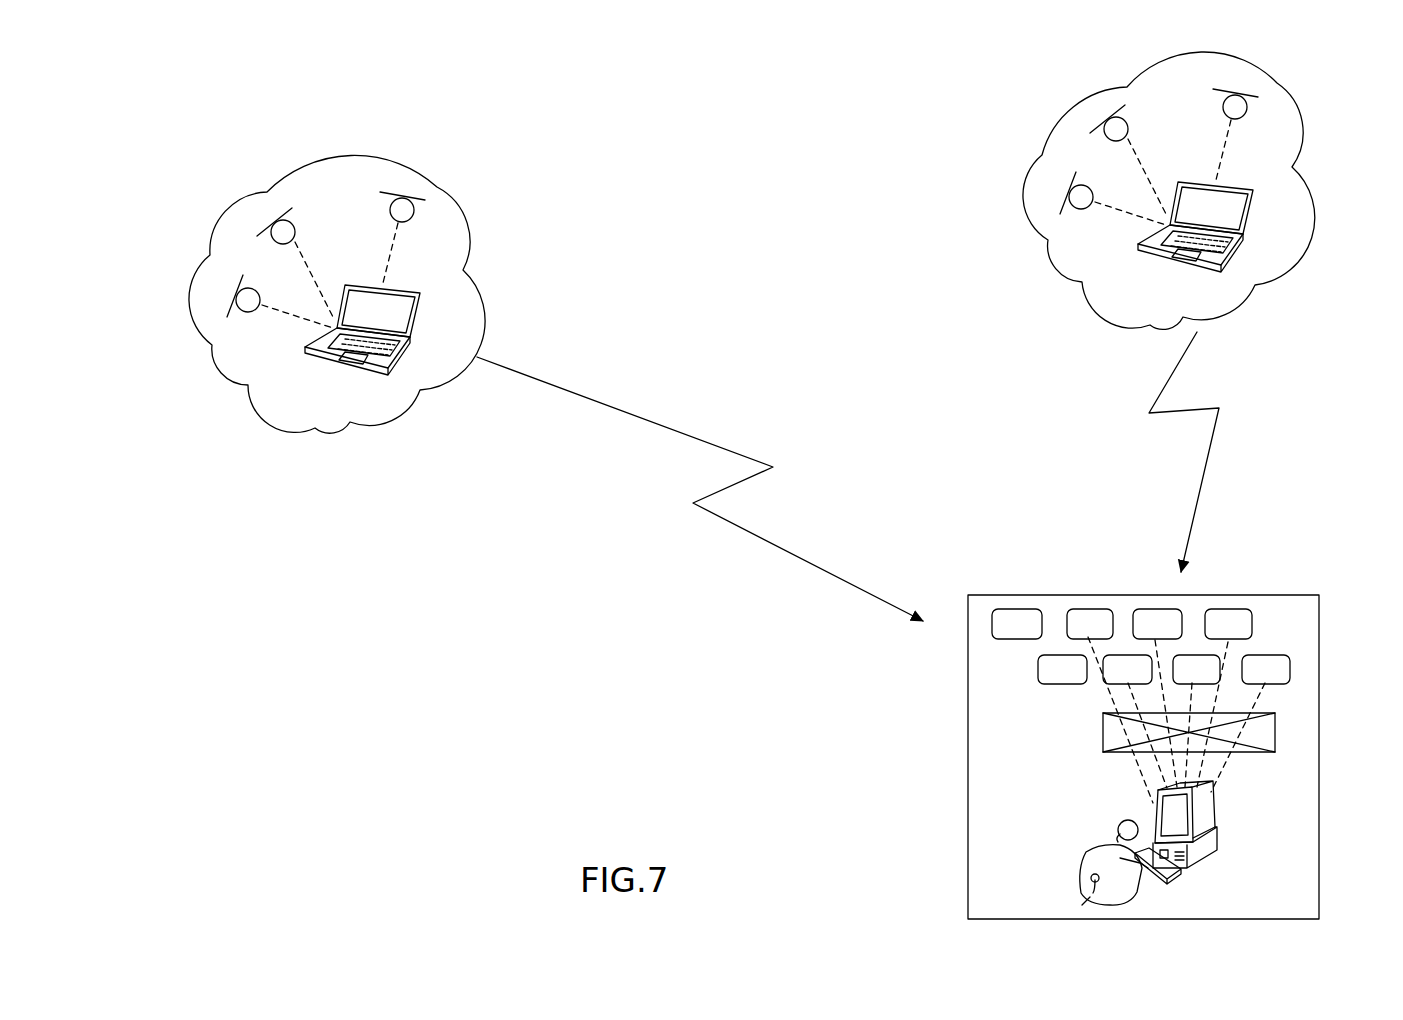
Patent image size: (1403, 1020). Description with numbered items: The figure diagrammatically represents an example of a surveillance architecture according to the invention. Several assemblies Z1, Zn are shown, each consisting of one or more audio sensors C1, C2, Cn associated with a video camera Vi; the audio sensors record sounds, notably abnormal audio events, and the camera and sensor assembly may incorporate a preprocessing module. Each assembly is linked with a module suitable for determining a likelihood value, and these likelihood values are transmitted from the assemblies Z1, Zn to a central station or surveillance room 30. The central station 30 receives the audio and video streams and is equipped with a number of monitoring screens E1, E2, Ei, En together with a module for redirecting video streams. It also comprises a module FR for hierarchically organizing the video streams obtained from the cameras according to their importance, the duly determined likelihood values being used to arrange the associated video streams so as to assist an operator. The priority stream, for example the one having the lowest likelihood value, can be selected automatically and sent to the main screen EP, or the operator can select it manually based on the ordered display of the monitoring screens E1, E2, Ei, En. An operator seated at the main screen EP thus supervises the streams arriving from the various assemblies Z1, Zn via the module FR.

The audio sensor C1 is at (228, 318).
The audio sensor C2 is at (283, 220).
The audio sensor Cn is at (403, 200).
The video camera Vi is at (423, 313).
The assembly Z1 is at (383, 400).
The assembly Zn is at (1308, 187).
The processing system 30 is at (968, 771).
The monitoring screen E1 is at (1013, 620).
The monitoring screen E2 is at (1079, 618).
The monitoring screen Ei is at (1234, 618).
The monitoring screen En is at (1275, 662).
The module for hierarchically organizing the video streams FR is at (1270, 736).
The main screen EP is at (1218, 827).